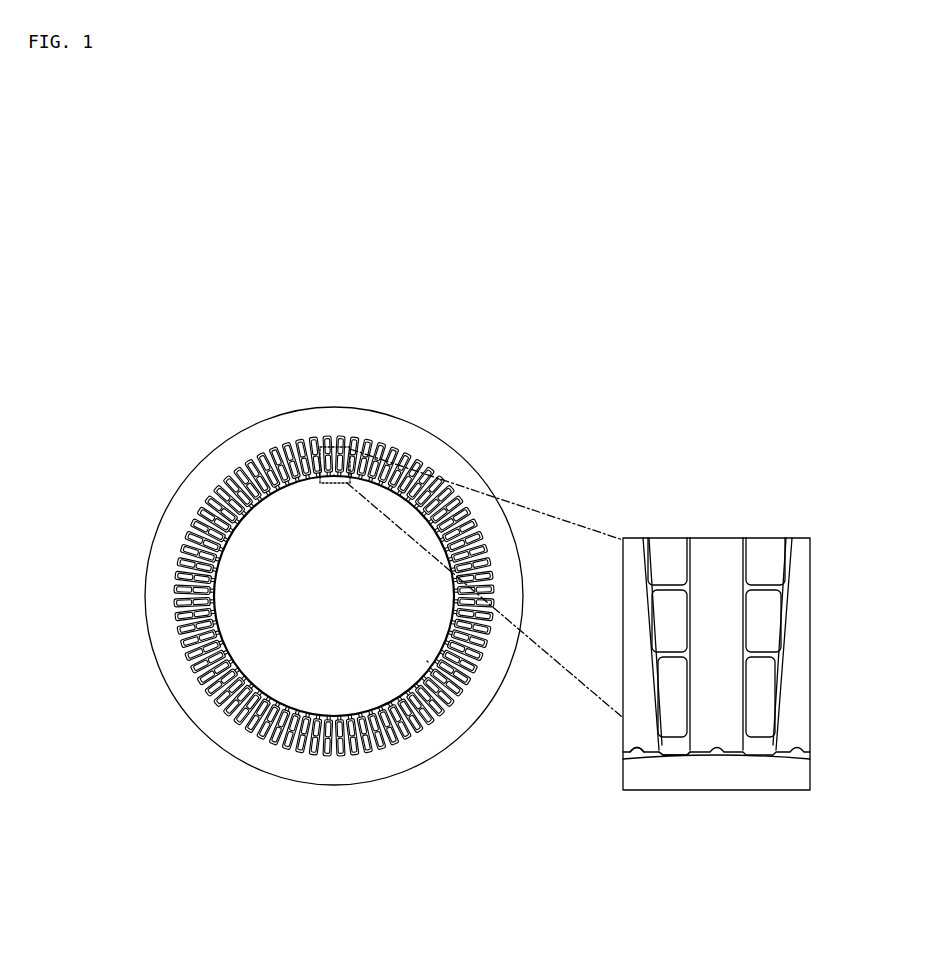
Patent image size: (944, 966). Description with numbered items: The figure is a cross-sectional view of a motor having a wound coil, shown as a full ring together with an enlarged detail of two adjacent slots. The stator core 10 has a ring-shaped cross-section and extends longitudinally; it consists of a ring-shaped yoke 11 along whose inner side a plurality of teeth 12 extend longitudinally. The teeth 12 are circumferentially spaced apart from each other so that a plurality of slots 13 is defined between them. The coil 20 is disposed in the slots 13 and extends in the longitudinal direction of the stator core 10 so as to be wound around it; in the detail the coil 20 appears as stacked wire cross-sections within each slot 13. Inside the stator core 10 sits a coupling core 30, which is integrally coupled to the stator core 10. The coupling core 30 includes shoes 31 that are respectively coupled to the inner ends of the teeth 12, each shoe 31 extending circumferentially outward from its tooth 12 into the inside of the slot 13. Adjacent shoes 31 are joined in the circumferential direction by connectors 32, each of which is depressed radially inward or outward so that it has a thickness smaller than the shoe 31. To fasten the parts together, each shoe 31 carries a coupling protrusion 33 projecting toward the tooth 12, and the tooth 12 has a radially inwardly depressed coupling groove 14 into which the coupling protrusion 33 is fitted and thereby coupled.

The stator core 10 is at (384, 397).
The yoke 11 is at (313, 422).
The teeth 12 is at (415, 453).
The slots 13 is at (780, 588).
The coupling groove 14 is at (797, 757).
The coil 20 is at (246, 466).
The coupling core 30 is at (428, 662).
The shoes 31 is at (643, 757).
The connectors 32 is at (677, 757).
The coupling protrusion 33 is at (717, 755).